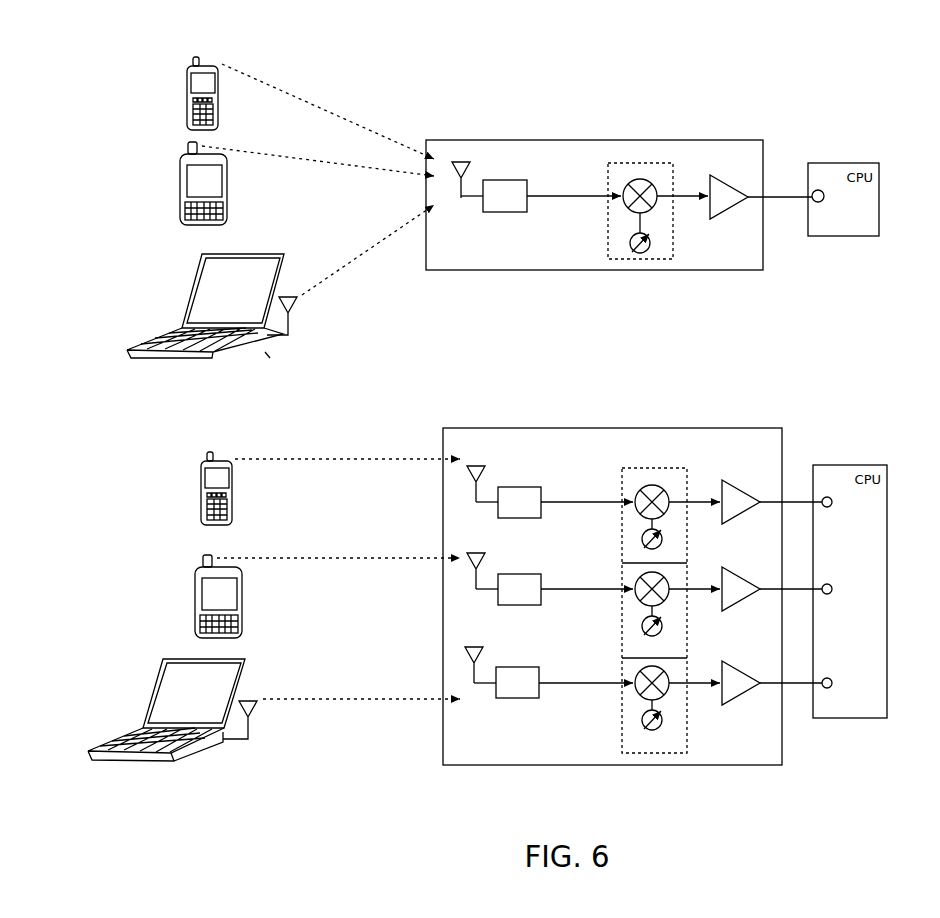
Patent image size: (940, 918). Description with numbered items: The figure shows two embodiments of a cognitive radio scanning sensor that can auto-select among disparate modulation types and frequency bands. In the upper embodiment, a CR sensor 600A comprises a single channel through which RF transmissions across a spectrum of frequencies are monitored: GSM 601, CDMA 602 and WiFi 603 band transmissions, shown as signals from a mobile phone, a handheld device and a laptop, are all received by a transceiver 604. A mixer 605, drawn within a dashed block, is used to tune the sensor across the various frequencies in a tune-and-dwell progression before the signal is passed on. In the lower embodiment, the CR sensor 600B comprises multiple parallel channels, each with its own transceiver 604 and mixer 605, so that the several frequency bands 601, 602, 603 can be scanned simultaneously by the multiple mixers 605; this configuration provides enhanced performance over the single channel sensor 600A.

The single channel CR sensor 600A is at (752, 140).
The multiple channel CR sensor 600B is at (727, 428).
The GSM band RF transmission 601 is at (300, 100).
The CDMA band RF transmission 602 is at (297, 158).
The WiFi band RF transmission 603 is at (350, 258).
The transceiver 604 is at (503, 179).
The mixer 605 is at (652, 163).